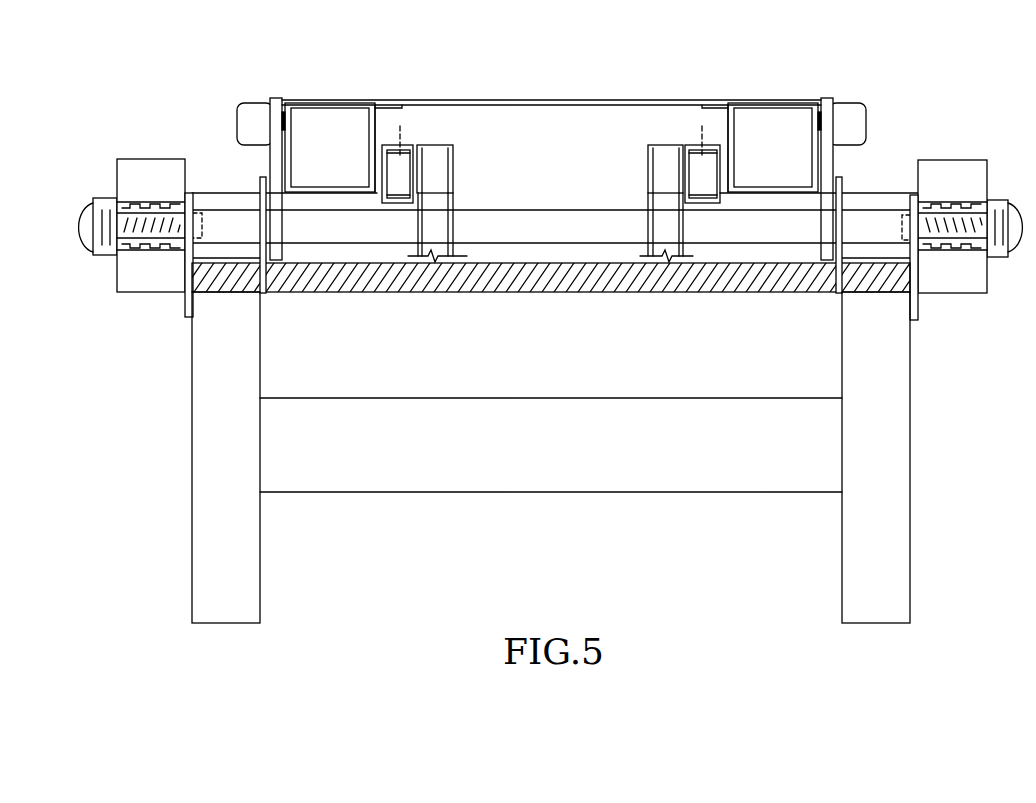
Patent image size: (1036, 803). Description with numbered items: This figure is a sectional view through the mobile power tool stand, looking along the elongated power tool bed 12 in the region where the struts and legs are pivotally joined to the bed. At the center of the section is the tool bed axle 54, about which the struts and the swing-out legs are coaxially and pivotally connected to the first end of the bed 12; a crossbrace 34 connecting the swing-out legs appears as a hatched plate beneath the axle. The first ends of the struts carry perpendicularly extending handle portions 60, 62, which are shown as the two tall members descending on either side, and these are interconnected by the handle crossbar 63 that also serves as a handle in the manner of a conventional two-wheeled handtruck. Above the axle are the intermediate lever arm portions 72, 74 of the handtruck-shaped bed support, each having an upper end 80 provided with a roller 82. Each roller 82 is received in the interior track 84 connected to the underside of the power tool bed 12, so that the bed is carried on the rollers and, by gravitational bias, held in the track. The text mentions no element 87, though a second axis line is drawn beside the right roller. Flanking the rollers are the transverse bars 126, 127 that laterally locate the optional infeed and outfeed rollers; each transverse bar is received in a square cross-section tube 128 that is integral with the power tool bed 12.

The power tool bed 12 is at (568, 102).
The crossbrace 34 is at (700, 293).
The tool bed axle 54 is at (565, 208).
The handle portion 60 is at (910, 473).
The handle portion 62 is at (192, 473).
The handle crossbar 63 is at (585, 398).
The intermediate lever arm portion 72 is at (650, 200).
The intermediate lever arm portion 74 is at (457, 201).
The upper end of lever arm portion 80 is at (456, 163).
The roller 82 is at (415, 140).
The interior track 84 is at (392, 133).
The right pivot axis 87 is at (698, 140).
The transverse bar 126 is at (774, 183).
The transverse bar 127 is at (331, 183).
The square cross-section tube 128 is at (380, 127).